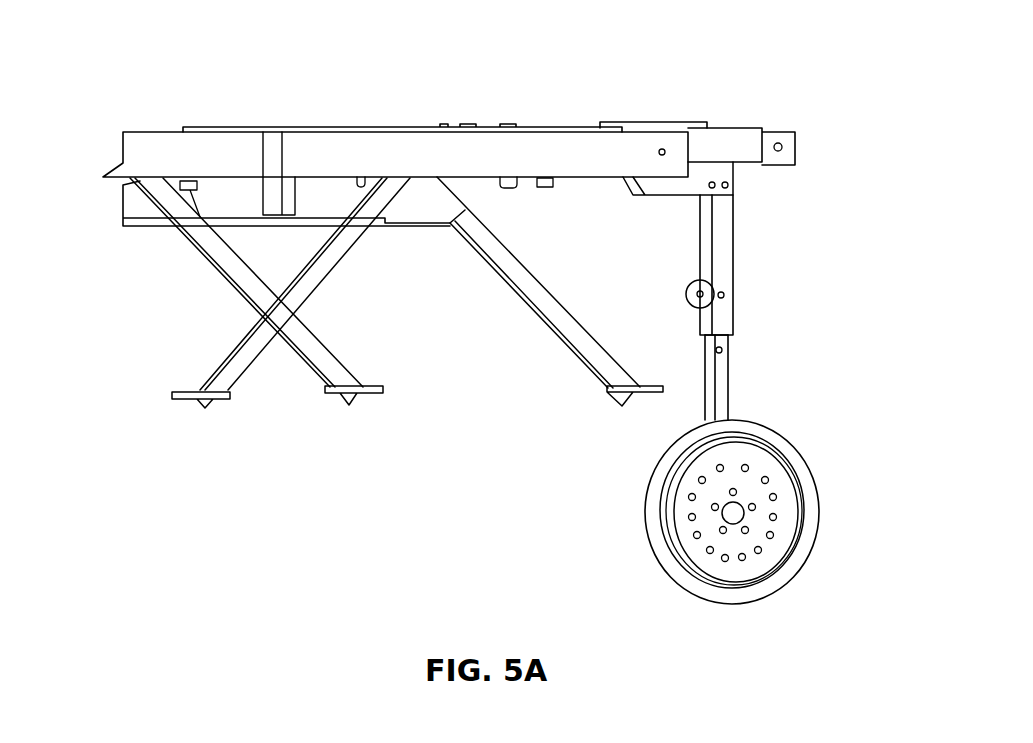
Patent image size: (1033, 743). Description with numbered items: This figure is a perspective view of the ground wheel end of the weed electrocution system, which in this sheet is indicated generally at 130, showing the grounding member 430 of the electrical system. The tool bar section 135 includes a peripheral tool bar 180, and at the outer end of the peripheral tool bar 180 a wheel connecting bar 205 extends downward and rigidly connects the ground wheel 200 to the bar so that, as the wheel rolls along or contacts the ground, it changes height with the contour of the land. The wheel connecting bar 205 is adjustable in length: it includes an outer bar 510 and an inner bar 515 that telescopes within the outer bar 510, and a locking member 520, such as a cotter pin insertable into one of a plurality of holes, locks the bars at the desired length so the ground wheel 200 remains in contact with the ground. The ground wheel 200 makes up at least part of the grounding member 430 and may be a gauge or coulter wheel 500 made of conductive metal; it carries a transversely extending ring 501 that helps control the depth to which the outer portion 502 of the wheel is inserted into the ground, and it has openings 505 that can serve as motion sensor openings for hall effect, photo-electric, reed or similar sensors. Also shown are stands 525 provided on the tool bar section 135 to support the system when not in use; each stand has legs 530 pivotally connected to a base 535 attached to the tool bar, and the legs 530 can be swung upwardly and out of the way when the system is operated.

The trailer frame assembly 130 is at (208, 43).
The tool bar section 135 is at (97, 124).
The peripheral tool bar 180 is at (721, 143).
The grounding member 430 is at (845, 266).
The outer bar 510 is at (734, 247).
The locking member 520 is at (688, 297).
The wheel connecting bar 205 is at (778, 336).
The inner bar 515 is at (729, 388).
The base 535 is at (410, 223).
The leg 530 is at (313, 282).
The stand 525 is at (426, 300).
The ground wheel 200 is at (812, 426).
The gauge or coulter wheel 500 is at (760, 598).
The outer portion 502 is at (652, 498).
The transversely extending ring 501 is at (673, 553).
The openings 505 is at (777, 517).